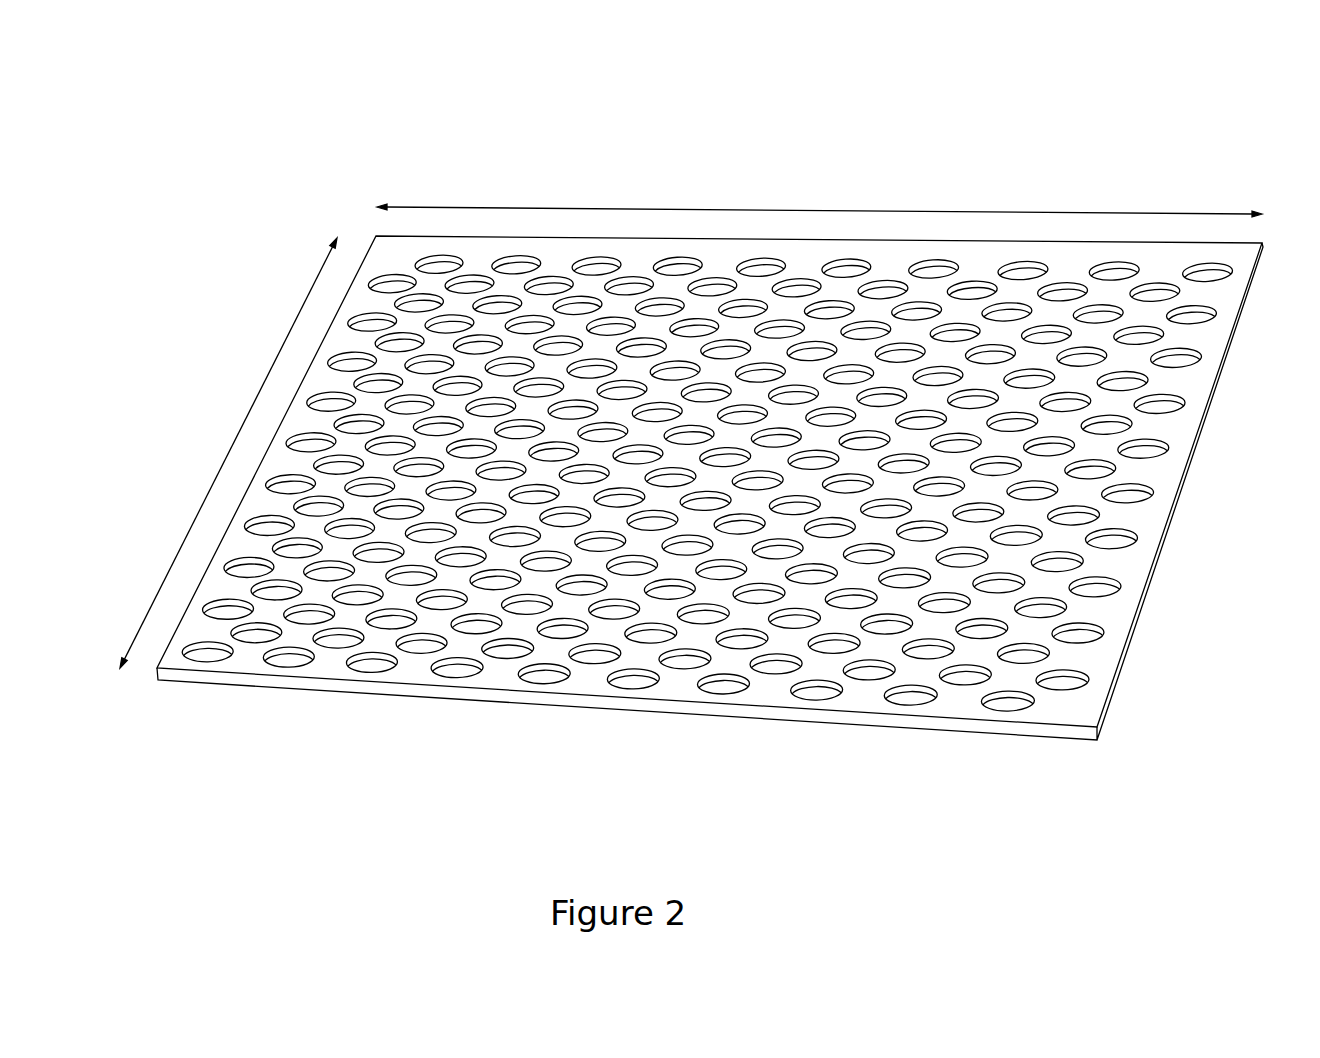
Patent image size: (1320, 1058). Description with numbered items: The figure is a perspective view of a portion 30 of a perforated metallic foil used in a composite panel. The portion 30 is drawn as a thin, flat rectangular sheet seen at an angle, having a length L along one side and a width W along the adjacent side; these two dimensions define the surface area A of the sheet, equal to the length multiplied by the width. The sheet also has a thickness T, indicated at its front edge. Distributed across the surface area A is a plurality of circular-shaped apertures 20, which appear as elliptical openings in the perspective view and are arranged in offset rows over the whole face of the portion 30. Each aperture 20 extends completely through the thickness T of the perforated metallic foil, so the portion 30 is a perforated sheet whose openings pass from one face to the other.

The portion of perforated metallic foil 30 is at (721, 424).
The apertures 20 is at (333, 418).
The surface area A is at (1119, 563).
The thickness T is at (600, 713).
The width W is at (819, 200).
The length L is at (228, 453).